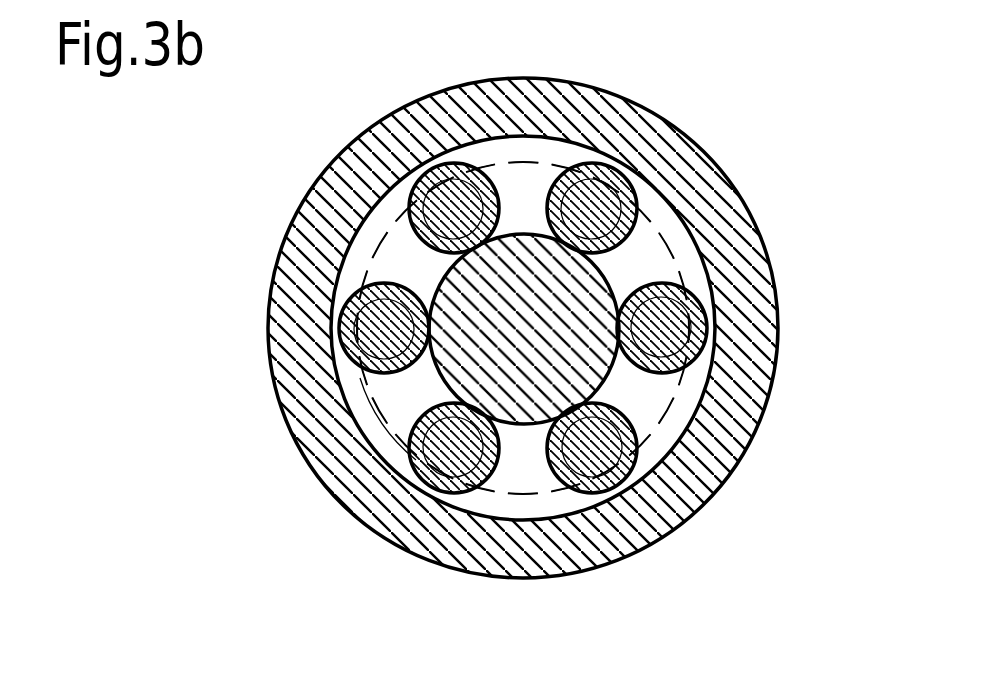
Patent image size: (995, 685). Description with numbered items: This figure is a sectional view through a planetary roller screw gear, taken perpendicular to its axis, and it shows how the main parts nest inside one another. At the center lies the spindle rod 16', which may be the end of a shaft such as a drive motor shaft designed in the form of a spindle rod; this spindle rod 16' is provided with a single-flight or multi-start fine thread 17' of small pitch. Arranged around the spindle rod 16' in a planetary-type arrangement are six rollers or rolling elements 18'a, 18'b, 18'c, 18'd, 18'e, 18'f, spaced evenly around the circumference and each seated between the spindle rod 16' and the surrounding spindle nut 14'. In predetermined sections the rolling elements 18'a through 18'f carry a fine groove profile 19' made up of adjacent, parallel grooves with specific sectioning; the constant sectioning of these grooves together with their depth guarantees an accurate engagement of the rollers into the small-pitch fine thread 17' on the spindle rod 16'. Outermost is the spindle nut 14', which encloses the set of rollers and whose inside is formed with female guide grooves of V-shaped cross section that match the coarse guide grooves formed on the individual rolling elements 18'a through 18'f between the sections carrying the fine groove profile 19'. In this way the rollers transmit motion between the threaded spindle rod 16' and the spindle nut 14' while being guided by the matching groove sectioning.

The spindle nut 14' is at (570, 328).
The spindle rod 16' is at (402, 329).
The fine thread 17' is at (592, 328).
The rolling element 18'a is at (749, 303).
The rolling element 18'b is at (652, 503).
The rolling element 18'c is at (407, 504).
The rolling element 18'd is at (310, 342).
The rolling element 18'e is at (357, 183).
The rolling element 18'f is at (670, 181).
The fine groove profile 19' is at (455, 343).